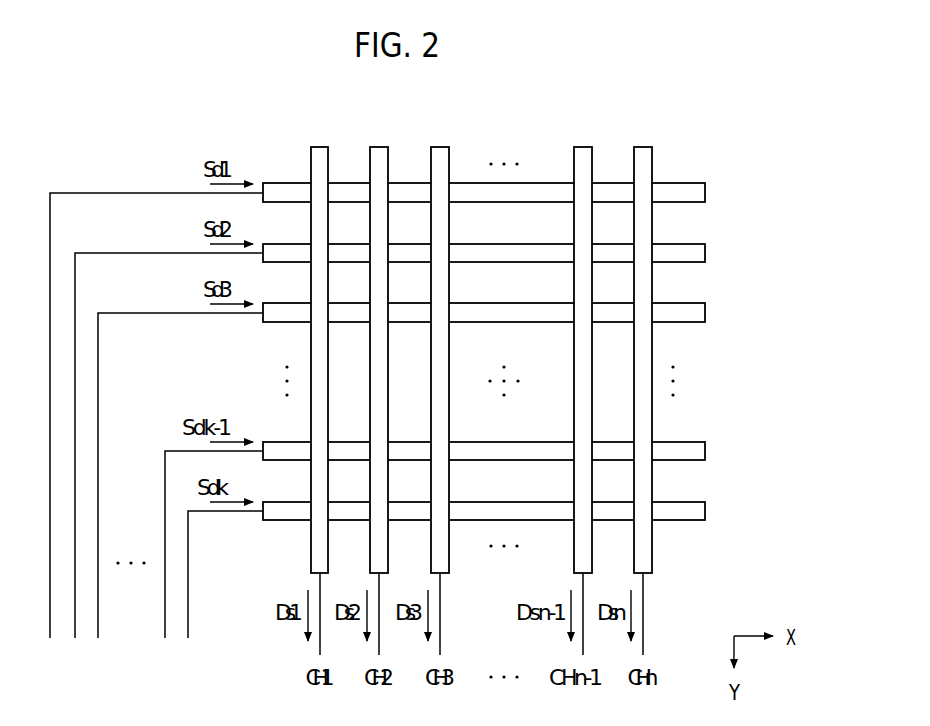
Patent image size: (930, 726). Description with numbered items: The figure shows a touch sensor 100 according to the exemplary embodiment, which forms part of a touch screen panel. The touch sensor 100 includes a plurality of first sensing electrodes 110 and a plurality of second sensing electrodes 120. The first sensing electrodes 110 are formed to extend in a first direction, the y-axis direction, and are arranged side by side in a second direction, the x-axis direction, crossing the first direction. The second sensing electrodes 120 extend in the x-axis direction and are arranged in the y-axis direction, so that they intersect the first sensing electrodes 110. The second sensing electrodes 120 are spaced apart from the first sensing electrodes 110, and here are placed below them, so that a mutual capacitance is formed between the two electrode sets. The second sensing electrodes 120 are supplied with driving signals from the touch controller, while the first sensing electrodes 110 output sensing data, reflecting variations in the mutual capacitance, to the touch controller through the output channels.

The touch sensor 100 is at (691, 124).
The first sensing electrodes 110 is at (316, 147).
The second sensing electrodes 120 is at (707, 194).